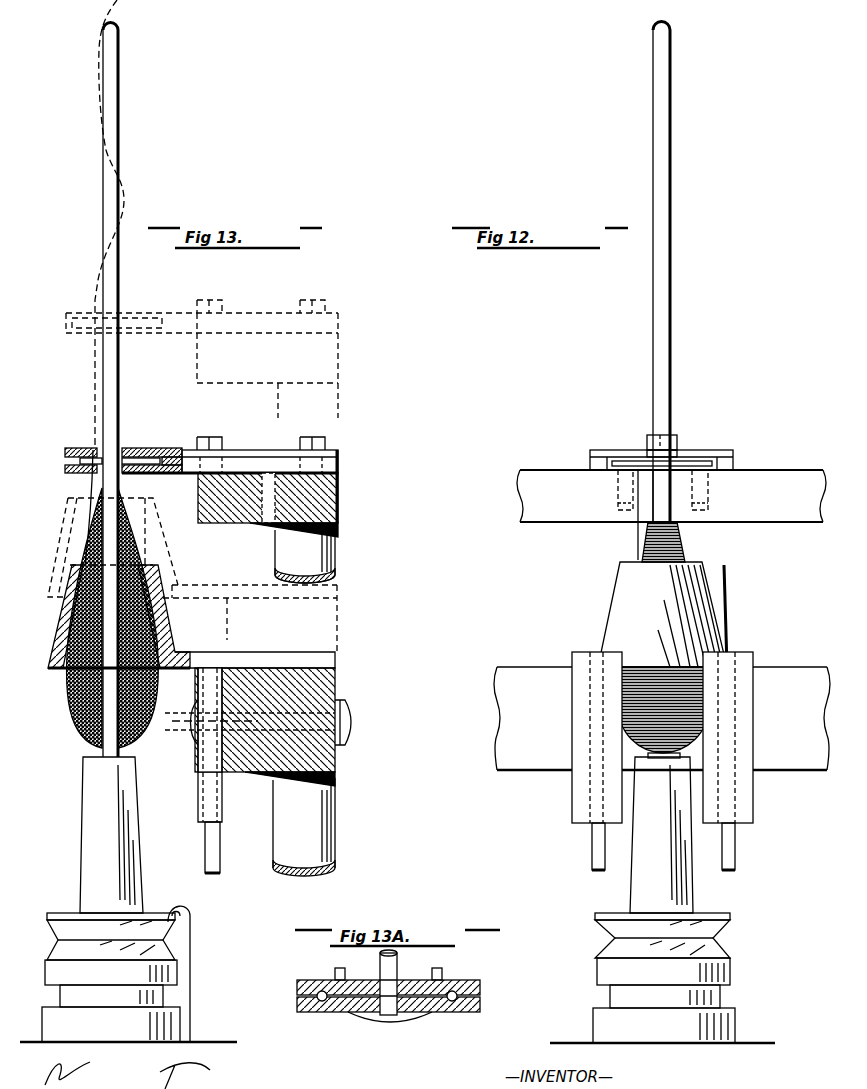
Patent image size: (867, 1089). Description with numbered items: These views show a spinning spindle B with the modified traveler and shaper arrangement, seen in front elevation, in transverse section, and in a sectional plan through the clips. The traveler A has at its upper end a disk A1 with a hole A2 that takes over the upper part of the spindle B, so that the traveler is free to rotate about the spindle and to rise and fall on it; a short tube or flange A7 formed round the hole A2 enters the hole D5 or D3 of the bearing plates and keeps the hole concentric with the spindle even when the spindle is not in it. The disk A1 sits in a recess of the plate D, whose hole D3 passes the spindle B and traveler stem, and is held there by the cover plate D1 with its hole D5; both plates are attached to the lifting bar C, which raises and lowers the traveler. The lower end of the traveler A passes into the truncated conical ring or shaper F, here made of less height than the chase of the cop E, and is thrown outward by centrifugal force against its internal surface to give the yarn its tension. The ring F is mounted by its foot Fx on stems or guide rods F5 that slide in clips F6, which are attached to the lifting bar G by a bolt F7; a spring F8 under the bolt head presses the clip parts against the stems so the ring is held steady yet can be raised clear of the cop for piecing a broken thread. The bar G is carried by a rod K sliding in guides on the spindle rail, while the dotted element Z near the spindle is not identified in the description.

In FIG. 13, the spinning spindle B is at (118, 281).
In FIG. 12, the spinning spindle B is at (671, 290).
In FIG. 13, the wire loop Z is at (127, 195).
In FIG. 13, the traveler A is at (85, 547).
In FIG. 13, the disk A1 is at (124, 470).
In FIG. 13, the hole A2 is at (121, 500).
In FIG. 13, the tube or flange A7 is at (124, 455).
In FIG. 12, the tube or flange A7 is at (656, 462).
In FIG. 13, the bar C is at (338, 499).
In FIG. 12, the bar C is at (671, 496).
In FIG. 13, the bearing plate D is at (183, 477).
In FIG. 12, the bearing plate D is at (733, 472).
In FIG. 13, the cover plate D1 is at (150, 448).
In FIG. 12, the cover plate D1 is at (700, 455).
In FIG. 13, the hole D3 is at (82, 470).
In FIG. 13, the hole D5 is at (92, 448).
In FIG. 13, the cop E is at (80, 690).
In FIG. 12, the cop E is at (686, 542).
In FIG. 13, the conical ring or shaper F is at (62, 603).
In FIG. 12, the conical ring or shaper F is at (662, 614).
In FIG. 13, the foot Fx is at (235, 663).
In FIG. 12, the foot Fx is at (585, 652).
In FIG. 13, the stems or guide rods F5 is at (207, 853).
In FIG. 12, the stems or guide rods F5 is at (592, 850).
In FIG. 13A, the stems or guide rods F5 is at (322, 1001).
In FIG. 13, the clips F6 is at (204, 796).
In FIG. 12, the clips F6 is at (588, 786).
In FIG. 13A, the clips F6 is at (297, 995).
In FIG. 13, the bolt F7 is at (357, 722).
In FIG. 13A, the bolt F7 is at (398, 962).
In FIG. 13A, the spring F8 is at (415, 1016).
In FIG. 13, the bar G is at (276, 720).
In FIG. 12, the bar G is at (808, 668).
In FIG. 13, the rod K is at (312, 806).